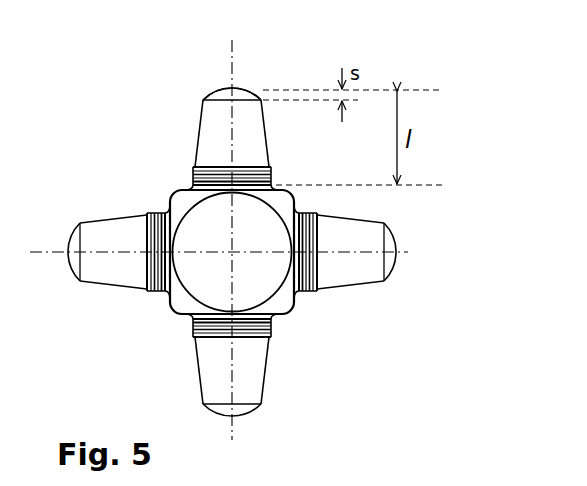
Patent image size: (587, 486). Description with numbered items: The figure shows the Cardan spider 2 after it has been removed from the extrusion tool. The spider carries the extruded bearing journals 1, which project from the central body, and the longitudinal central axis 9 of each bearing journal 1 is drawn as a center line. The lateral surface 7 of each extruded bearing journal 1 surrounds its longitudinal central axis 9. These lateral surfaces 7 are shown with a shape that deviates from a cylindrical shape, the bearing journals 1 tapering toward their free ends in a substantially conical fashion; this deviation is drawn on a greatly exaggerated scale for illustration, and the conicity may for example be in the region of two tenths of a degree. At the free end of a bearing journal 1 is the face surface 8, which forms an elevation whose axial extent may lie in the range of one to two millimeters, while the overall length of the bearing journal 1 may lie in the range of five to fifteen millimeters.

The bearing journal 1 is at (236, 230).
The Cardan spider 2 is at (296, 311).
The lateral surface 7 is at (189, 111).
The end face of trunnion 8 is at (222, 97).
The longitudinal central axis 9 is at (234, 80).